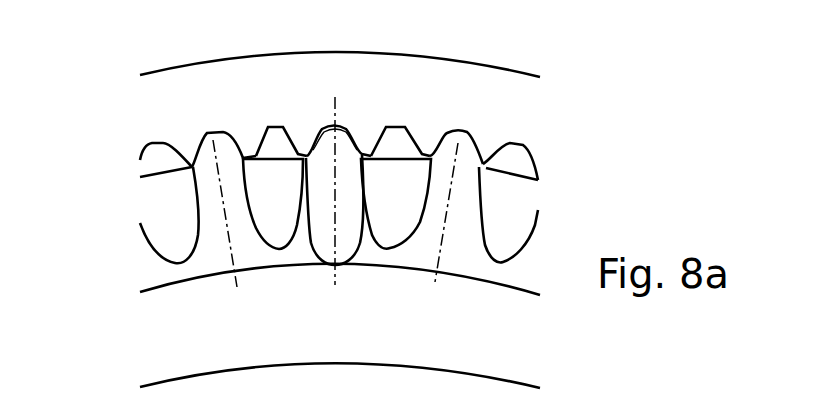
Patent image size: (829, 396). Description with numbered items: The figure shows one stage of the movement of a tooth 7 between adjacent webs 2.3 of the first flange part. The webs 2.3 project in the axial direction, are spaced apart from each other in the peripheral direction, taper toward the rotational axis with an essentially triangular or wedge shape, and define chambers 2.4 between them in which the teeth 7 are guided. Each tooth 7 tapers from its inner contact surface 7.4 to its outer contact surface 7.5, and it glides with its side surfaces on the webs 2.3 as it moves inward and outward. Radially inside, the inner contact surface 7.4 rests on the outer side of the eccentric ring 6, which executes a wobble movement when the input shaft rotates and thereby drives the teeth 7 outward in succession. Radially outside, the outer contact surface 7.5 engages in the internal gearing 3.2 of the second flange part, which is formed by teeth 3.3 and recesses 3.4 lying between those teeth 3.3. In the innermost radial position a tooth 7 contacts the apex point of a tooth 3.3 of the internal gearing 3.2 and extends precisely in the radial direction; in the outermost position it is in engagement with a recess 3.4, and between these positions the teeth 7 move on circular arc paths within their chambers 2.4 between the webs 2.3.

The web 2.3 is at (163, 237).
The chamber 2.4 is at (205, 158).
The internal gearing 3.2 is at (483, 160).
The tooth of the internal gearing 3.3 is at (488, 165).
The recess 3.4 is at (277, 123).
The eccentric ring 6 is at (178, 333).
The tooth 7 is at (317, 243).
The inner contact surface 7.4 is at (335, 264).
The outer contact surface 7.5 is at (338, 118).